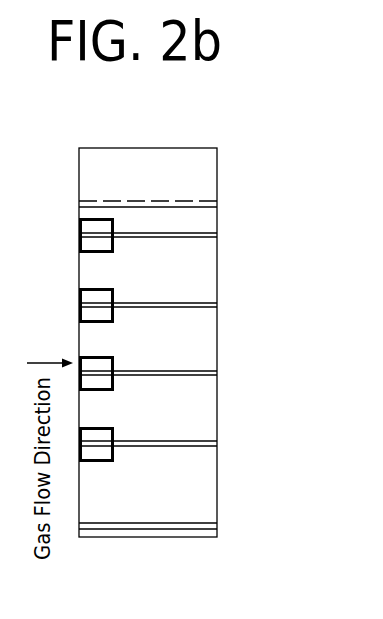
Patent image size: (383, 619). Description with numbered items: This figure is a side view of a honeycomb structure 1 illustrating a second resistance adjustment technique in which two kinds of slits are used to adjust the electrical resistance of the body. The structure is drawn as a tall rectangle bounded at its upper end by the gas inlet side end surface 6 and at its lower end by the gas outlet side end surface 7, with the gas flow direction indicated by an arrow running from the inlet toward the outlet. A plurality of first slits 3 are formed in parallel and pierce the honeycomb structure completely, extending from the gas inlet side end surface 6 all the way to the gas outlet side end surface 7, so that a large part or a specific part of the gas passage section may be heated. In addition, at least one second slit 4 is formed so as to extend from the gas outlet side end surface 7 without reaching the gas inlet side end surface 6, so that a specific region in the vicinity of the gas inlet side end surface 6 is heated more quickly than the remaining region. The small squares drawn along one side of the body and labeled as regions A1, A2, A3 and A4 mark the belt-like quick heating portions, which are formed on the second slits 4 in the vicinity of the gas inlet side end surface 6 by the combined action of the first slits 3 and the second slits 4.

The exhaust gas purifying catalyst body 1 is at (146, 142).
The first slit 3 is at (196, 202).
The second slit 4 is at (183, 440).
The gas inlet side end surface 6 is at (79, 215).
The gas outlet side end surface 7 is at (218, 255).
The quick heating portion region A1 is at (98, 432).
The quick heating portion region A2 is at (98, 363).
The quick heating portion region A3 is at (98, 293).
The quick heating portion region A4 is at (80, 242).